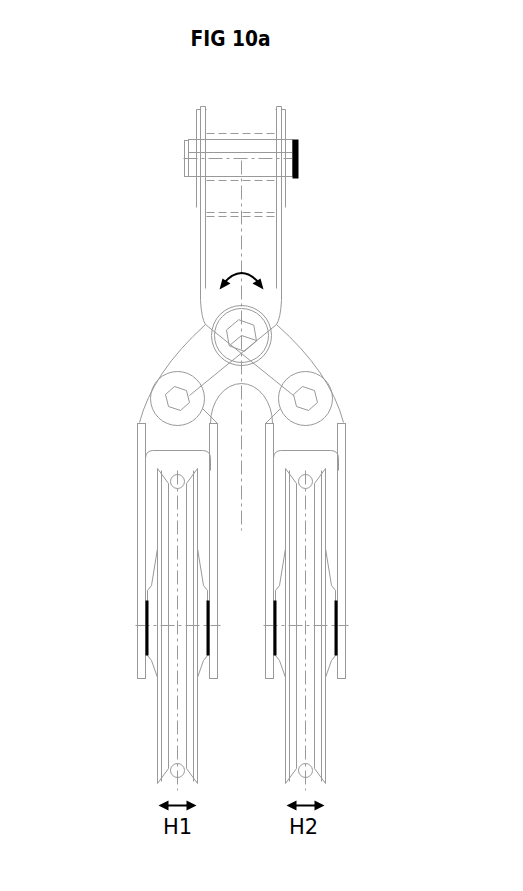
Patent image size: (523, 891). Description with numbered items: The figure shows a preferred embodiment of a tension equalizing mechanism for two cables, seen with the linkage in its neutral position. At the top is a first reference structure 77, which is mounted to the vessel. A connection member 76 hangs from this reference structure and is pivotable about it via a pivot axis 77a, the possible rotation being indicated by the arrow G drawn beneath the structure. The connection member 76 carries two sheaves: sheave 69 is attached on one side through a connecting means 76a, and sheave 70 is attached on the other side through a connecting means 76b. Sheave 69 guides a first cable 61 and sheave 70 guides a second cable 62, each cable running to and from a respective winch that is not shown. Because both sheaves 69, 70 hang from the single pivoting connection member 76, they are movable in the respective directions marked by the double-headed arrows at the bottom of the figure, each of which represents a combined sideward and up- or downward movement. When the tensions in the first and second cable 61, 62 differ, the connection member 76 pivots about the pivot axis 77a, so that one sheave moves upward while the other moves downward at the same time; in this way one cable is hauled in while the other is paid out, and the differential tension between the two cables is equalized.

The first reference structure 77 is at (267, 262).
The pivot axis 77a is at (241, 335).
The connection member 76 is at (283, 355).
The connecting means 76a is at (177, 399).
The connecting means 76b is at (307, 400).
The first cable 61 is at (177, 478).
The second cable 62 is at (305, 485).
The sheave 69 is at (142, 545).
The sheave 70 is at (337, 560).